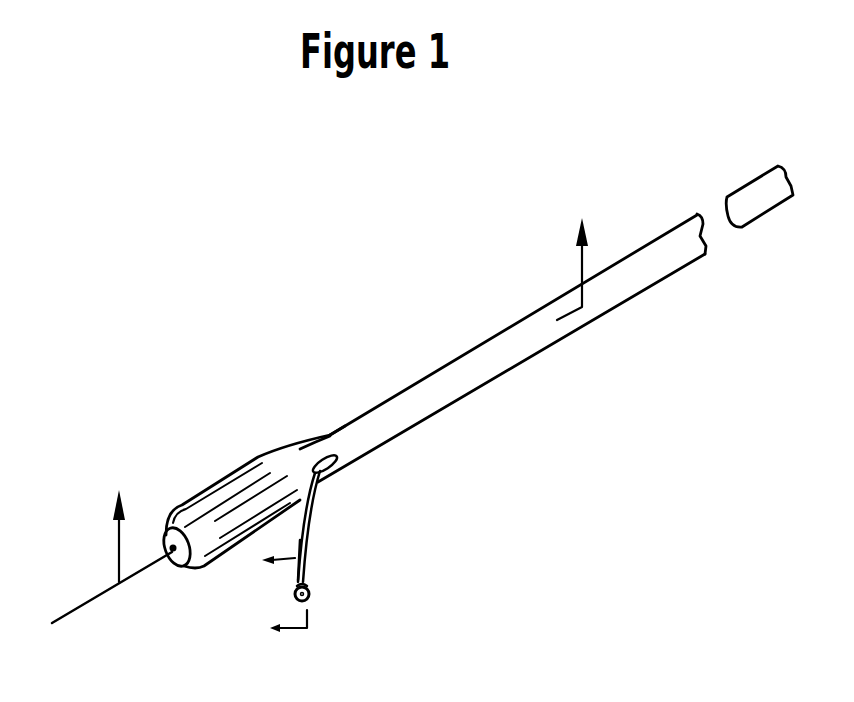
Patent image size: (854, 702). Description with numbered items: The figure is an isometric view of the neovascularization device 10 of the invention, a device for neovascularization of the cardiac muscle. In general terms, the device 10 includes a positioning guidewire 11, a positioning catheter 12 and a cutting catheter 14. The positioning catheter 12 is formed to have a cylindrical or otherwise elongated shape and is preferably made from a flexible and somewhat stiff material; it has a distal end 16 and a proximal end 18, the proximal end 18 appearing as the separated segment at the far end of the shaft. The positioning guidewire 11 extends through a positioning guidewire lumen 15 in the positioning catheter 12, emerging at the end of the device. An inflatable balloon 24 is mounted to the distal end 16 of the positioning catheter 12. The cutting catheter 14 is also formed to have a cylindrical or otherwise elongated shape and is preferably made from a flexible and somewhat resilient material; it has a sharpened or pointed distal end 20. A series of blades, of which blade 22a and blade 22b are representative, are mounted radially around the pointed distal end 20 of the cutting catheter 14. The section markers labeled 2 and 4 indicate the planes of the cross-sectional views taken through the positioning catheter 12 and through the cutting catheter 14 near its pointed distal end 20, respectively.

The neovascularization device 10 is at (338, 334).
The positioning guidewire 11 is at (88, 600).
The positioning catheter 12 is at (445, 365).
The cutting catheter 14 is at (307, 523).
The positioning guidewire lumen 15 is at (174, 555).
The distal end 16 is at (313, 446).
The proximal end 18 is at (767, 163).
The pointed distal end 20 is at (303, 569).
The blade 22a is at (297, 597).
The blade 22b is at (312, 598).
The inflatable balloon 24 is at (197, 494).
The section line 2- 2 is at (349, 377).
The section line 4- 4 is at (276, 603).